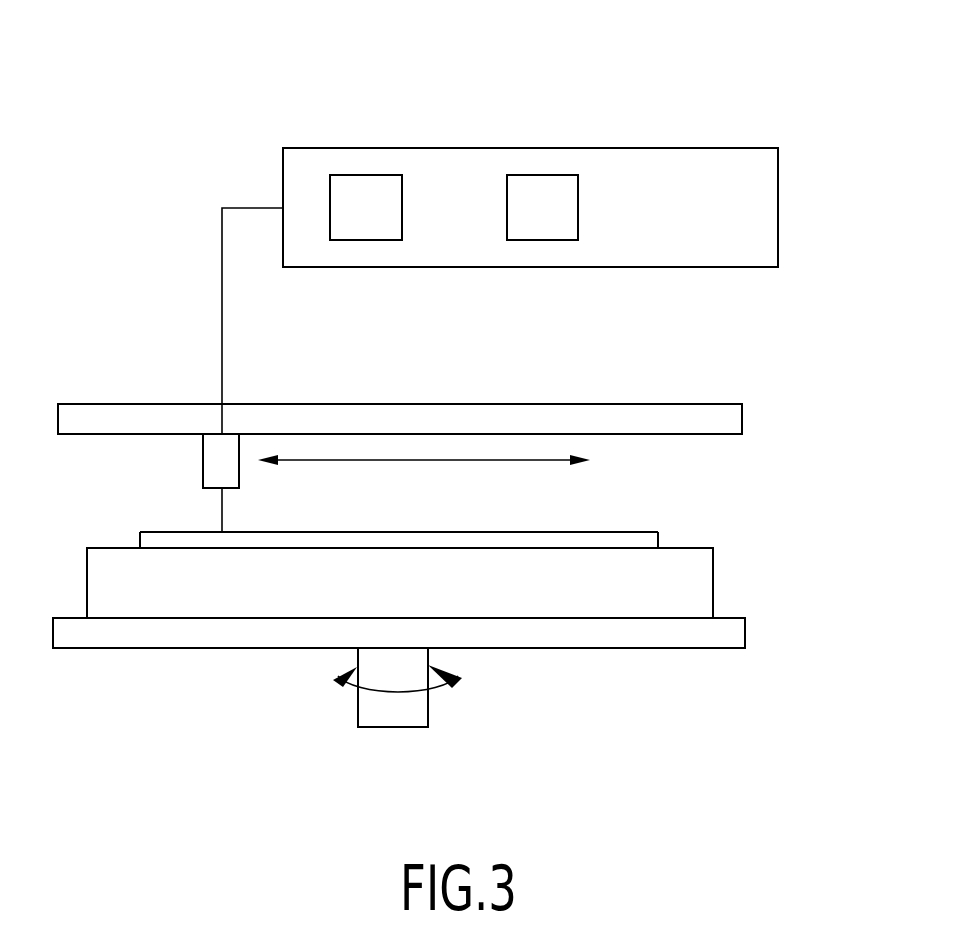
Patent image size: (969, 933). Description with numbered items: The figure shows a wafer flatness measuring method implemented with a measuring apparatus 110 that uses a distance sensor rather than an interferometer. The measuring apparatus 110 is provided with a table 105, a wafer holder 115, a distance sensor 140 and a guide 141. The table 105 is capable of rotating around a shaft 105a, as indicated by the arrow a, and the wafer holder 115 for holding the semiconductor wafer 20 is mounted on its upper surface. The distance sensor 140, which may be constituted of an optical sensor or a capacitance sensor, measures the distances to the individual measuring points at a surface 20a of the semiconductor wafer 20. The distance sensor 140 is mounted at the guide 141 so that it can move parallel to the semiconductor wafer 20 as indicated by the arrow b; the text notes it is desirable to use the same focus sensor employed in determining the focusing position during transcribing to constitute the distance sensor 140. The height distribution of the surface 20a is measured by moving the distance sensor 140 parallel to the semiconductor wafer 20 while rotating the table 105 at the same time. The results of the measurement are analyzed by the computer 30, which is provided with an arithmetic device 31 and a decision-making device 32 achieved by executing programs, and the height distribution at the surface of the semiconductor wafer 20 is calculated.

The measuring apparatus 110 is at (250, 99).
The computer 30 is at (707, 188).
The arithmetic device 31 is at (355, 185).
The decision-making device 32 is at (543, 187).
The guide 141 is at (670, 415).
The distance sensor 140 is at (213, 460).
The semiconductor wafer 20 is at (660, 540).
The surface 20a is at (640, 530).
The wafer holder 115 is at (715, 582).
The table 105 is at (716, 633).
The shaft 105a is at (418, 717).
The arrow a is at (350, 705).
The arrow b is at (427, 460).